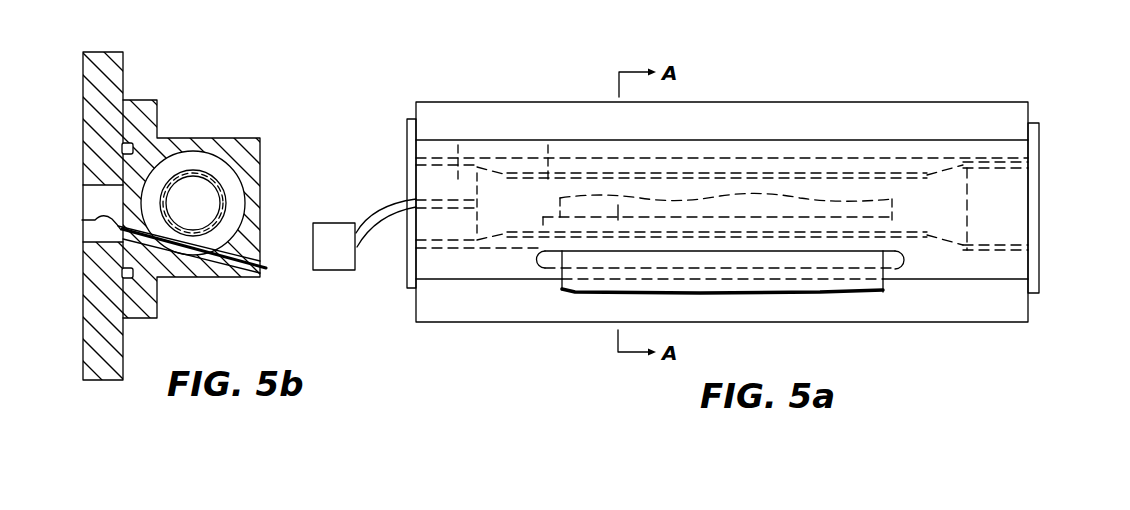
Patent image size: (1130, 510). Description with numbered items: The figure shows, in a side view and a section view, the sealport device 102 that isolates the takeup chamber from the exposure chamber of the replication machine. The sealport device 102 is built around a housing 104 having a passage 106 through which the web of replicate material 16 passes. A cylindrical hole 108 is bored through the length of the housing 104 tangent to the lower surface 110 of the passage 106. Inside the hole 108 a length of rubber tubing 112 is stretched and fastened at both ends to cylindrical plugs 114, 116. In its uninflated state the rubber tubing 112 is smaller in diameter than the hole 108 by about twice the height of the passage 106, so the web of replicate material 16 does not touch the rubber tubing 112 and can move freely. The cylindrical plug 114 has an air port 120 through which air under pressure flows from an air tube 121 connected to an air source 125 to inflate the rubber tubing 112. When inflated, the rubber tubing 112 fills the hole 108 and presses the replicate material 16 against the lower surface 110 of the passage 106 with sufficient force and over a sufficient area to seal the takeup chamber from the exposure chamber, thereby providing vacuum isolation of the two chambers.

In FIG. 5b, the replicate material 16 is at (268, 268).
In FIG. 5a, the replicate material 16 is at (882, 292).
In FIG. 5b, the sealport device 102 is at (241, 116).
In FIG. 5a, the sealport device 102 is at (406, 98).
In FIG. 5b, the housing 104 is at (210, 145).
In FIG. 5a, the housing 104 is at (1018, 270).
In FIG. 5b, the passage 106 is at (255, 262).
In FIG. 5a, the passage 106 is at (537, 261).
In FIG. 5b, the cylindrical hole 108 is at (233, 190).
In FIG. 5a, the cylindrical hole 108 is at (927, 168).
In FIG. 5b, the lower surface 110 is at (82, 220).
In FIG. 5b, the rubber tubing 112 is at (200, 238).
In FIG. 5a, the rubber tubing 112 is at (549, 146).
In FIG. 5a, the cylindrical plug 114 is at (458, 146).
In FIG. 5a, the cylindrical plug 116 is at (990, 249).
In FIG. 5a, the air port 120 is at (445, 205).
In FIG. 5a, the air tube 121 is at (377, 212).
In FIG. 5a, the air source 125 is at (357, 262).